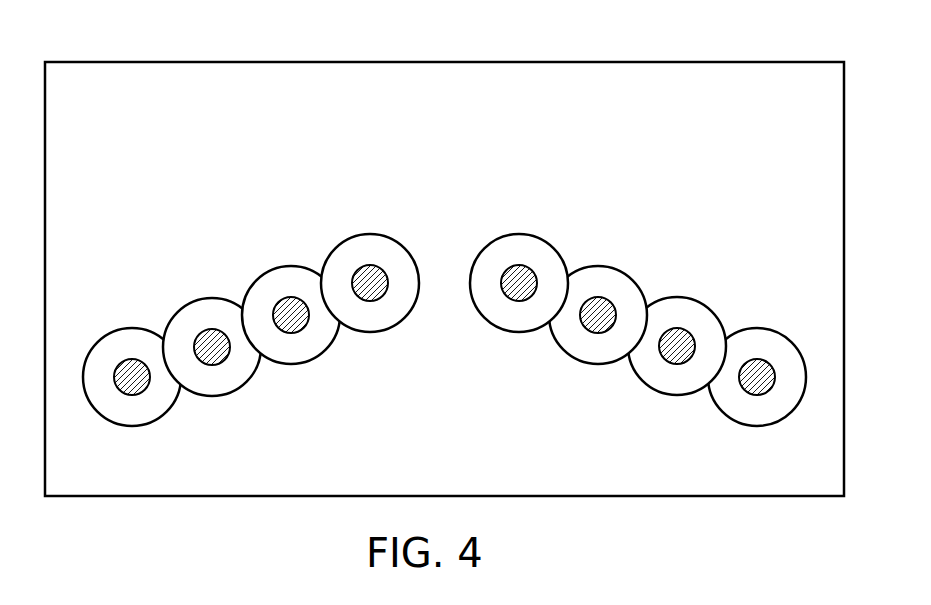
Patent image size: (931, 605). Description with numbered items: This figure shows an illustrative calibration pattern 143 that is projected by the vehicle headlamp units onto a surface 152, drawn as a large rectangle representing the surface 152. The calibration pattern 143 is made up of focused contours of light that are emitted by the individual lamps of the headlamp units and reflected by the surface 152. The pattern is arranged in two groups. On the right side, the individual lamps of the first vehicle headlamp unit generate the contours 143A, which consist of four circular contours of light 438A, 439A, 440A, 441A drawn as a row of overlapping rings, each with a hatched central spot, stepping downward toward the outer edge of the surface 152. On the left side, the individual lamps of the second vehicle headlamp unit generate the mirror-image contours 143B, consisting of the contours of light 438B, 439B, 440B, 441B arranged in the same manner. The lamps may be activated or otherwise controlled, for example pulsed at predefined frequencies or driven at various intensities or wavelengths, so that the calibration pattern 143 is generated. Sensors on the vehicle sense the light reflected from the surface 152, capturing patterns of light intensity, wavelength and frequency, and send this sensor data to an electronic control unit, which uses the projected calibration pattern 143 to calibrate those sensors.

The surface 152 is at (117, 62).
The calibration pattern 143 is at (697, 155).
The contours of light 143A is at (700, 262).
The contours of light 143B is at (190, 262).
The contour of light 438A is at (756, 428).
The contour of light 439A is at (675, 397).
The contour of light 440A is at (597, 366).
The contour of light 441A is at (517, 334).
The contour of light 438B is at (133, 428).
The contour of light 439B is at (212, 397).
The contour of light 440B is at (290, 366).
The contour of light 441B is at (370, 334).